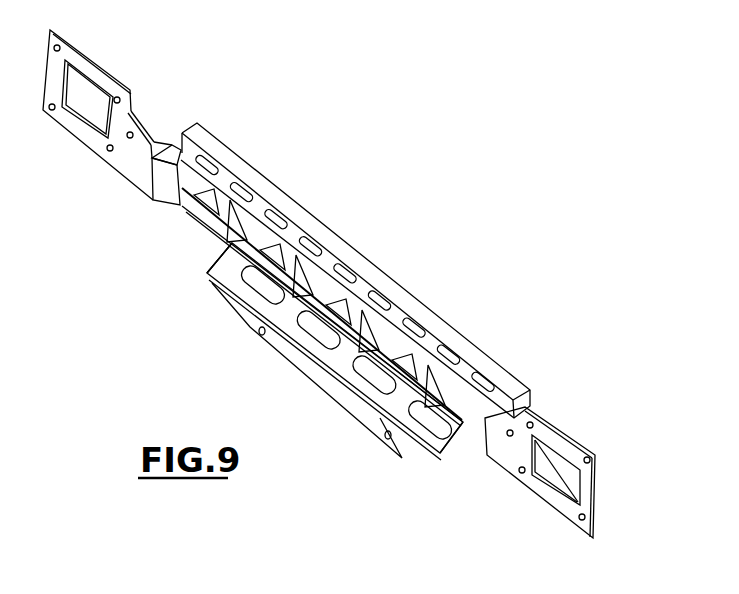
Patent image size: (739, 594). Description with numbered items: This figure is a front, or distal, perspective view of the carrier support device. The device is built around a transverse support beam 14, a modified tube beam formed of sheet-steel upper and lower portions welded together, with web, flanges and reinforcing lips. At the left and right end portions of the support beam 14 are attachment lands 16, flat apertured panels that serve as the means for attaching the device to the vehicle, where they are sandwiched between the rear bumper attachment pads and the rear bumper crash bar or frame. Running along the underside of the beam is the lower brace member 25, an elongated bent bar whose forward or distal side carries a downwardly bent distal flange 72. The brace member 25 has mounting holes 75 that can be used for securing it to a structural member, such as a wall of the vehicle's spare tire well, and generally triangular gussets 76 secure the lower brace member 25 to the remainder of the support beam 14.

The transverse support beam 14 is at (404, 263).
The attachment lands 16 is at (107, 68).
The lower brace member 25 is at (186, 311).
The distal flange 72 is at (243, 331).
The mounting holes 75 is at (263, 336).
The gussets 76 is at (225, 262).